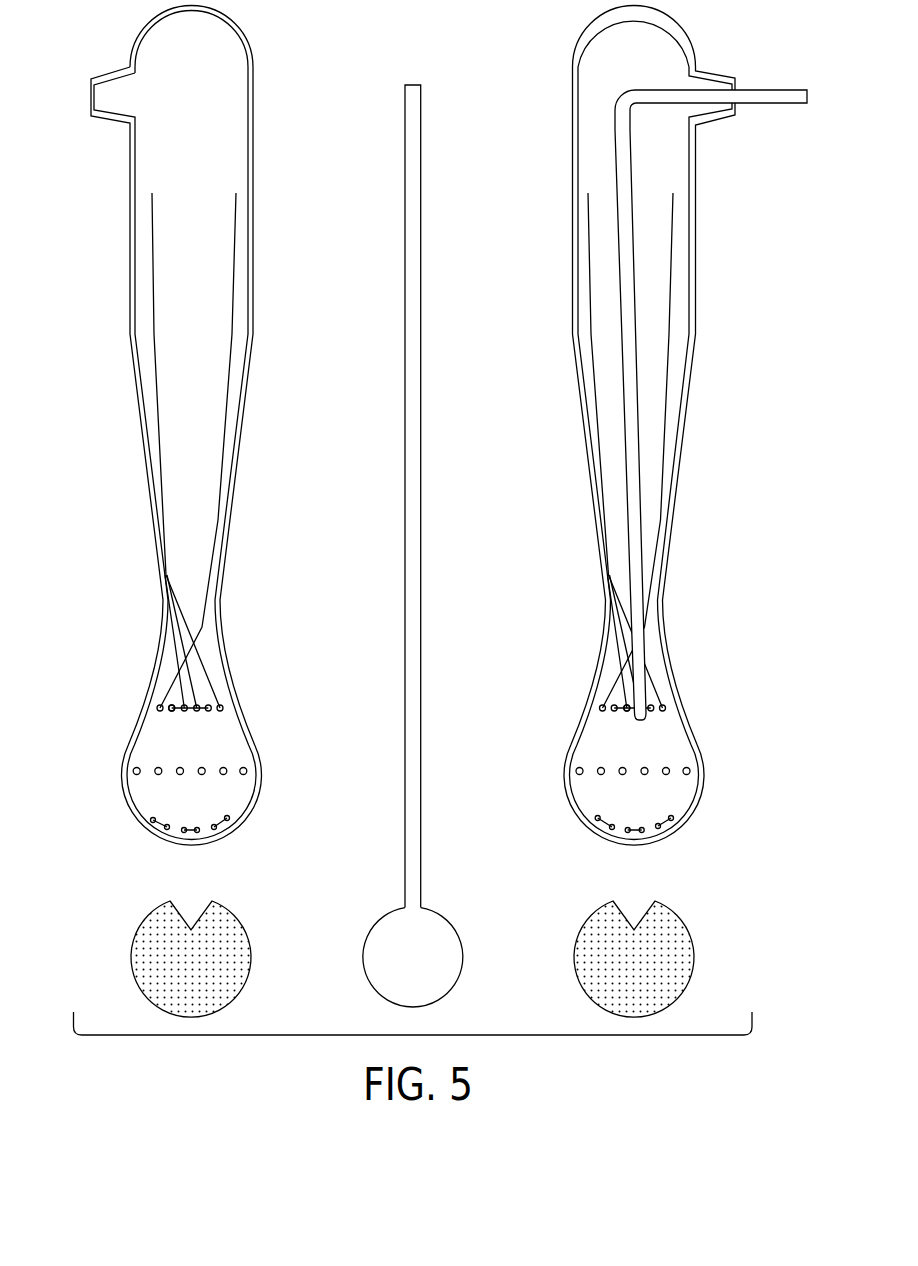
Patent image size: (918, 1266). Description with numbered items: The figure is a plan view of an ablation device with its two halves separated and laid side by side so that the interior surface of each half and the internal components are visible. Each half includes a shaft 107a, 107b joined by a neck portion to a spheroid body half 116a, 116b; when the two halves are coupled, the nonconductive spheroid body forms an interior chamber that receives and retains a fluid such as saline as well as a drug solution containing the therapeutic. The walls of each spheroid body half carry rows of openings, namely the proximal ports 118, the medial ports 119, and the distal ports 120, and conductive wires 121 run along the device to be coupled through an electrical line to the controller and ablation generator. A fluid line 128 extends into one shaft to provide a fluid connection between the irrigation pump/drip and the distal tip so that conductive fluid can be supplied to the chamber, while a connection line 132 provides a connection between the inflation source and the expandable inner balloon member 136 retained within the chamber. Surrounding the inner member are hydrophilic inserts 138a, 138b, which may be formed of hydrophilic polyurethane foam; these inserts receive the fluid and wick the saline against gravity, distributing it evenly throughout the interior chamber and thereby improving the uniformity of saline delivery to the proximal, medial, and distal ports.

The shaft 107a is at (182, 425).
The shaft 107b is at (703, 425).
The spheroid body half 116a is at (122, 765).
The spheroid body half 116b is at (702, 753).
The proximal ports 118 is at (222, 706).
The medial ports 119 is at (245, 769).
The distal ports 120 is at (229, 818).
The conductive wires 121 is at (171, 705).
The fluid line 128 is at (767, 105).
The connection line 132 is at (421, 315).
The expandable inner balloon member 136 is at (375, 920).
The hydrophilic insert 138a is at (131, 968).
The hydrophilic insert 138b is at (695, 949).